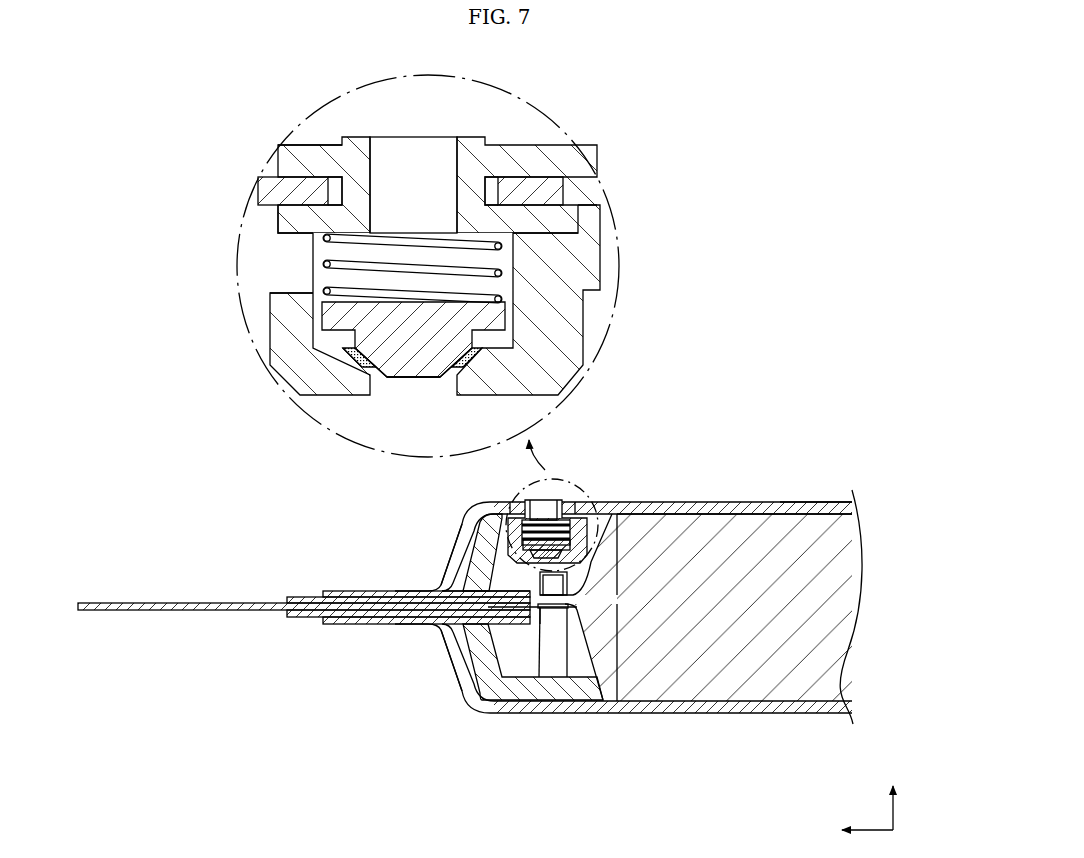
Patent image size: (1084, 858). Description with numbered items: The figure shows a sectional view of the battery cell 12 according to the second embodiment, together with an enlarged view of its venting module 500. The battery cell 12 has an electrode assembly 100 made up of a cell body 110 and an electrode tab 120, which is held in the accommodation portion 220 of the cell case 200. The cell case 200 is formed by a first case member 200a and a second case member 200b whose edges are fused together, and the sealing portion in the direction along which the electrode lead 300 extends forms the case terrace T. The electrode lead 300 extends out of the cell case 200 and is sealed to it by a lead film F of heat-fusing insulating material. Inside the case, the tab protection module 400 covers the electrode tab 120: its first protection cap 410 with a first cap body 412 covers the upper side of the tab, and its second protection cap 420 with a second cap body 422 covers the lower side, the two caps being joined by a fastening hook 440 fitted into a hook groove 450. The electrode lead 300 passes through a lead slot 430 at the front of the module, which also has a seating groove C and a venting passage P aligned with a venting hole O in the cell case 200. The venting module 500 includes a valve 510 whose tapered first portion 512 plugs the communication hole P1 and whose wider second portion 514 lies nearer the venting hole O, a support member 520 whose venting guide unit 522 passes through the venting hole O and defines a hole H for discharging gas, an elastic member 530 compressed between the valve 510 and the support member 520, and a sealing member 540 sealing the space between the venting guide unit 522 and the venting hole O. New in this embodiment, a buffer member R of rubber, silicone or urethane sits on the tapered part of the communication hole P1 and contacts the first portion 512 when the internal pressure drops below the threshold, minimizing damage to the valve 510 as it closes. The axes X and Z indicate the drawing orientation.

The battery cell 12 is at (186, 446).
The electrode assembly 100 is at (730, 582).
The cell body 110 is at (709, 513).
The electrode tab 120 is at (598, 591).
The cell case 200 is at (659, 587).
The first case member 200a is at (792, 508).
The second case member 200b is at (752, 714).
The accommodation portion 220 is at (825, 513).
The electrode lead 300 is at (186, 604).
The tab protection module 400 is at (505, 614).
The first protection cap 410 is at (474, 520).
The first cap body 412 is at (473, 558).
The second protection cap 420 is at (484, 695).
The second cap body 422 is at (474, 647).
The lead slot 430 is at (447, 591).
The fastening hook 440 is at (553, 658).
The hook groove 450 is at (577, 578).
The venting module 500 is at (418, 250).
The valve 510 is at (343, 350).
The first portion 512 is at (428, 353).
The second portion 514 is at (333, 318).
The support member 520 is at (558, 220).
The venting guide unit 522 is at (328, 190).
The elastic member 530 is at (318, 277).
The sealing member 540 is at (560, 190).
The seating groove C is at (293, 228).
The lead film F is at (304, 598).
The hole H is at (392, 143).
The venting hole O is at (340, 145).
The venting passage P is at (268, 293).
The communication hole P1 is at (395, 384).
The buffer member R is at (362, 356).
The case terrace T is at (344, 591).
The X axis X is at (854, 831).
The Z axis Z is at (893, 786).